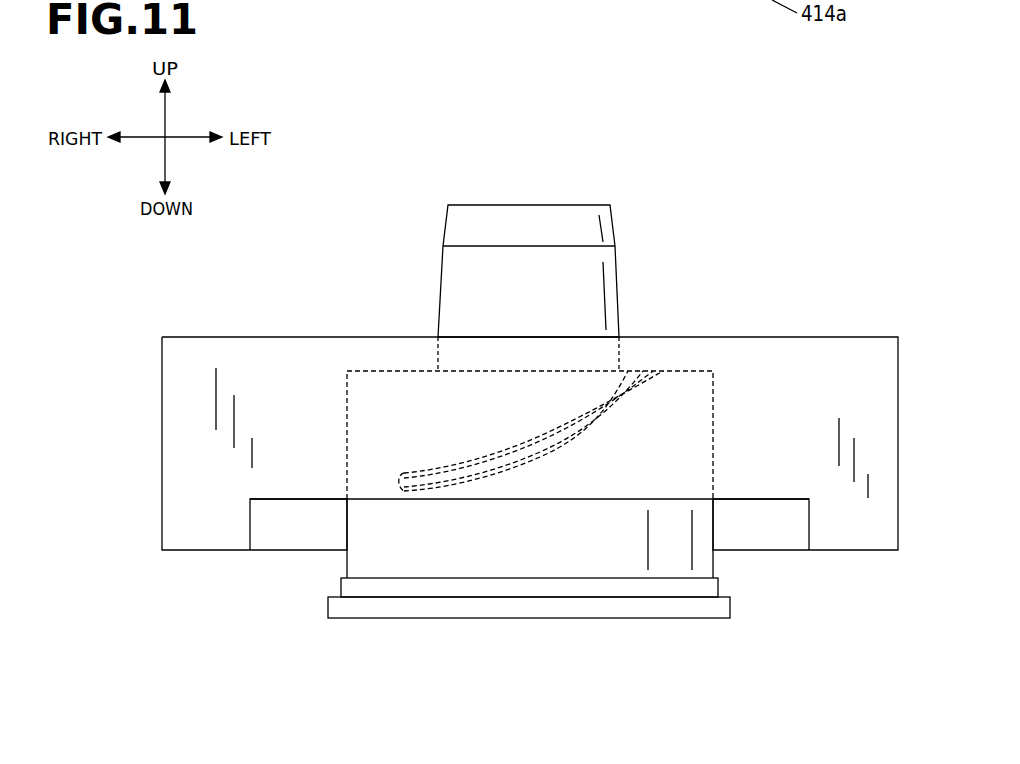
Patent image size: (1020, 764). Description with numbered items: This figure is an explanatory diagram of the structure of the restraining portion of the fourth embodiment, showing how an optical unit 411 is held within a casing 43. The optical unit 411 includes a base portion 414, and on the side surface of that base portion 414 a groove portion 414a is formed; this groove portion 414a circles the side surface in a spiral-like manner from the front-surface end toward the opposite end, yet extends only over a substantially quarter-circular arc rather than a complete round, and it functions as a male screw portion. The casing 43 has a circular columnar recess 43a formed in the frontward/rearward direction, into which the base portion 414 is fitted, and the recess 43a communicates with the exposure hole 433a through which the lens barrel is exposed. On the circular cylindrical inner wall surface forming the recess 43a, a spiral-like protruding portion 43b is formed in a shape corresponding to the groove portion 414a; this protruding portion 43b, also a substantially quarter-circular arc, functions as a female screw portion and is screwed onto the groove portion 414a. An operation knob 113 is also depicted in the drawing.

The casing 43 is at (162, 410).
The recess 43a is at (350, 403).
The protruding portion 43b is at (472, 484).
The operation knob 113 is at (440, 273).
The optical unit 411 is at (386, 280).
The base portion 414 is at (713, 565).
The groove portion 414a is at (553, 457).
The exposure hole 433a is at (621, 336).